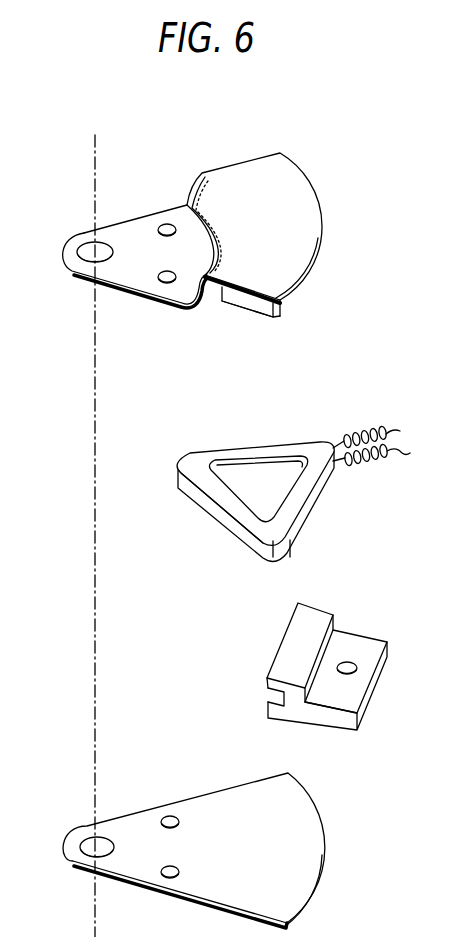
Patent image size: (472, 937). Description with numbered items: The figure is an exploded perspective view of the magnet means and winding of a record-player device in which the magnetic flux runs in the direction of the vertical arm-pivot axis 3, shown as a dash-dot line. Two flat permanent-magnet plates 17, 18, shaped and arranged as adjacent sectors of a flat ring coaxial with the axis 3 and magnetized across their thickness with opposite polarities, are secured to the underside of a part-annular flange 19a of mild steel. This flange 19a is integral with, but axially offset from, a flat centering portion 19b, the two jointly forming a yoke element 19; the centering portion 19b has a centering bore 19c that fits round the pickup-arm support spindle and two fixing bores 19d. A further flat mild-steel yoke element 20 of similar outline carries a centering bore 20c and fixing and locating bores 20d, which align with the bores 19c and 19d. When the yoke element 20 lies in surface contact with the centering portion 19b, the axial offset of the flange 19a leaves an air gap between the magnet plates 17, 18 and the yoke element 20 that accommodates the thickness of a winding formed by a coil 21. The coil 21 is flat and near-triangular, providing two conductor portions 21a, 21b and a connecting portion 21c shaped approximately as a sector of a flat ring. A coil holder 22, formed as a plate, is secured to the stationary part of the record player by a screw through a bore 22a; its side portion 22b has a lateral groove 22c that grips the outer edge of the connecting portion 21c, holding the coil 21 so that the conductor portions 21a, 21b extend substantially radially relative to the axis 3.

The arm-pivot axis 3 is at (93, 146).
The permanent-magnet plate 17 is at (248, 300).
The permanent-magnet plate 18 is at (247, 309).
The yoke element 19 is at (180, 244).
The part-annular flange 19a is at (248, 178).
The flat centering portion 19b is at (137, 228).
The centering bore 19c is at (90, 257).
The fixing bores 19d is at (165, 284).
The yoke element 20 is at (183, 842).
The centering bore 20c is at (92, 842).
The fixing and locating bores 20d is at (172, 815).
The coil 21 is at (290, 484).
The conductor portion 21a is at (223, 450).
The conductor portion 21b is at (230, 523).
The connecting portion 21c is at (303, 510).
The coil holder 22 is at (319, 663).
The bore 22a is at (357, 669).
The side portion 22b is at (303, 617).
The lateral groove 22c is at (268, 697).